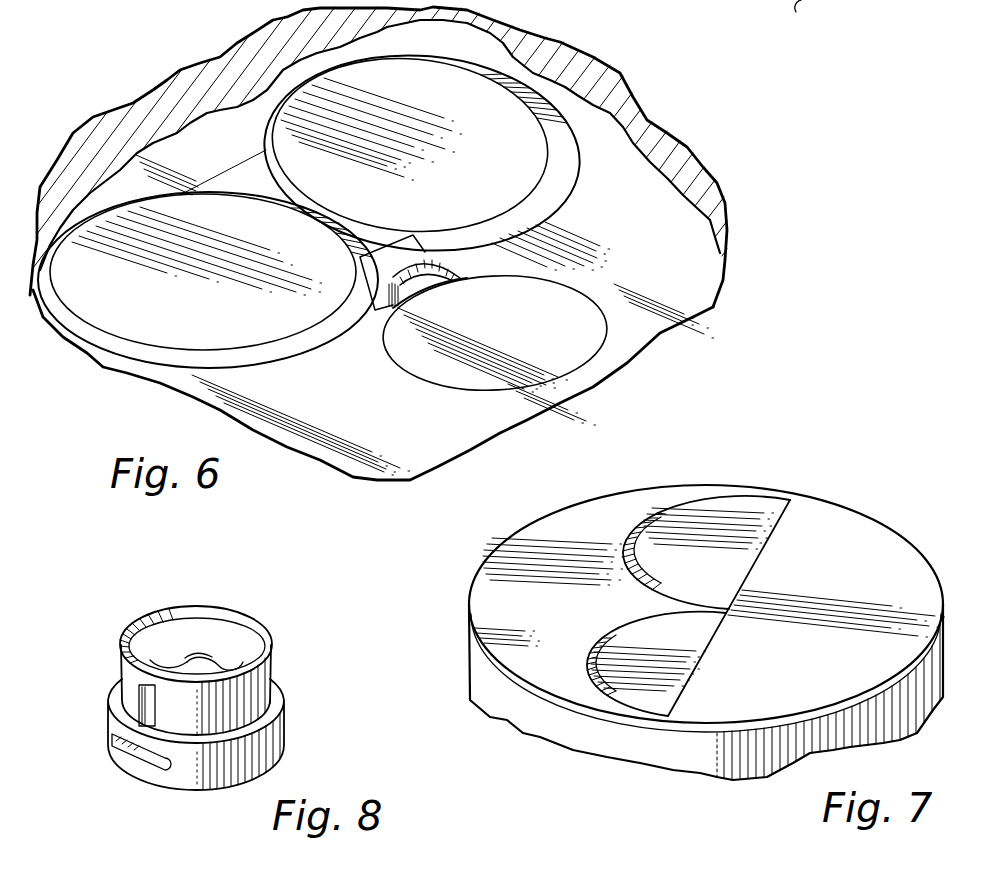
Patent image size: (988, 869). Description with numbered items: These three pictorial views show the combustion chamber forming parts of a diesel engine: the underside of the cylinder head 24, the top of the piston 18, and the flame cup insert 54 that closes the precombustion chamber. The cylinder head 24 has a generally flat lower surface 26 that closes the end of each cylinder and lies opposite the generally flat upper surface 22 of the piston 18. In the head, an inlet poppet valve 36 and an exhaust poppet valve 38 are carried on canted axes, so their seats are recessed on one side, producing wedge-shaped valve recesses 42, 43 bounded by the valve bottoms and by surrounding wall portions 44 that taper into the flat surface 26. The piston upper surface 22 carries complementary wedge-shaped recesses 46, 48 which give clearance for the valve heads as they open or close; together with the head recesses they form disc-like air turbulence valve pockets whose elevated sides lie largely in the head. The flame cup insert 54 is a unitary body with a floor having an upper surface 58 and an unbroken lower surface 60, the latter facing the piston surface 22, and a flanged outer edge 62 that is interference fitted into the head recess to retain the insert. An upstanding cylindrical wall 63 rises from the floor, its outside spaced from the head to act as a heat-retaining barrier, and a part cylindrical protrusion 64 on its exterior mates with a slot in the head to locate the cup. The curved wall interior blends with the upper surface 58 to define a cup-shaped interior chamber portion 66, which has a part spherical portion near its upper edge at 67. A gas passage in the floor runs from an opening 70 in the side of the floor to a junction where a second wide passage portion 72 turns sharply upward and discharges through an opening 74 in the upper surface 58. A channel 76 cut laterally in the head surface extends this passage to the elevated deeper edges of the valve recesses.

In FIG. 7, the piston 18 is at (478, 694).
In FIG. 7, the flat upper surface of the piston 22 is at (500, 575).
In FIG. 6, the cylinder head 24 is at (712, 216).
In FIG. 6, the flat lower surface of the cylinder head 26 is at (700, 287).
In FIG. 6, the inlet poppet valve 36 is at (133, 326).
In FIG. 6, the exhaust poppet valve 38 is at (266, 149).
In FIG. 6, the valve recess 42 is at (197, 337).
In FIG. 6, the valve recess 43 is at (528, 140).
In FIG. 6, the surrounding wall portions 44 is at (544, 198).
In FIG. 7, the wedge-shaped recess in the piston 46 is at (700, 518).
In FIG. 7, the wedge-shaped recess in the piston 48 is at (603, 660).
In FIG. 6, the flame cup insert 54 is at (556, 299).
In FIG. 8, the flame cup insert 54 is at (286, 703).
In FIG. 8, the upper surface of the floor 58 is at (170, 660).
In FIG. 6, the lower surface of the floor 60 is at (577, 333).
In FIG. 6, the flanged outer edge 62 is at (429, 283).
In FIG. 8, the flanged outer edge 62 is at (280, 745).
In FIG. 8, the upstanding cylindrical wall 63 is at (264, 693).
In FIG. 8, the part cylindrical protrusion 64 is at (140, 707).
In FIG. 8, the cup-shaped interior chamber portion 66 is at (218, 636).
In FIG. 8, the upper edge of the wall interior 67 is at (258, 640).
In FIG. 6, the opening in the side of the floor 70 is at (424, 252).
In FIG. 8, the opening in the side of the floor 70 is at (124, 748).
In FIG. 8, the second wide passage portion 72 is at (241, 660).
In FIG. 8, the opening in the floor upper surface 74 is at (197, 657).
In FIG. 6, the channel 76 is at (414, 241).